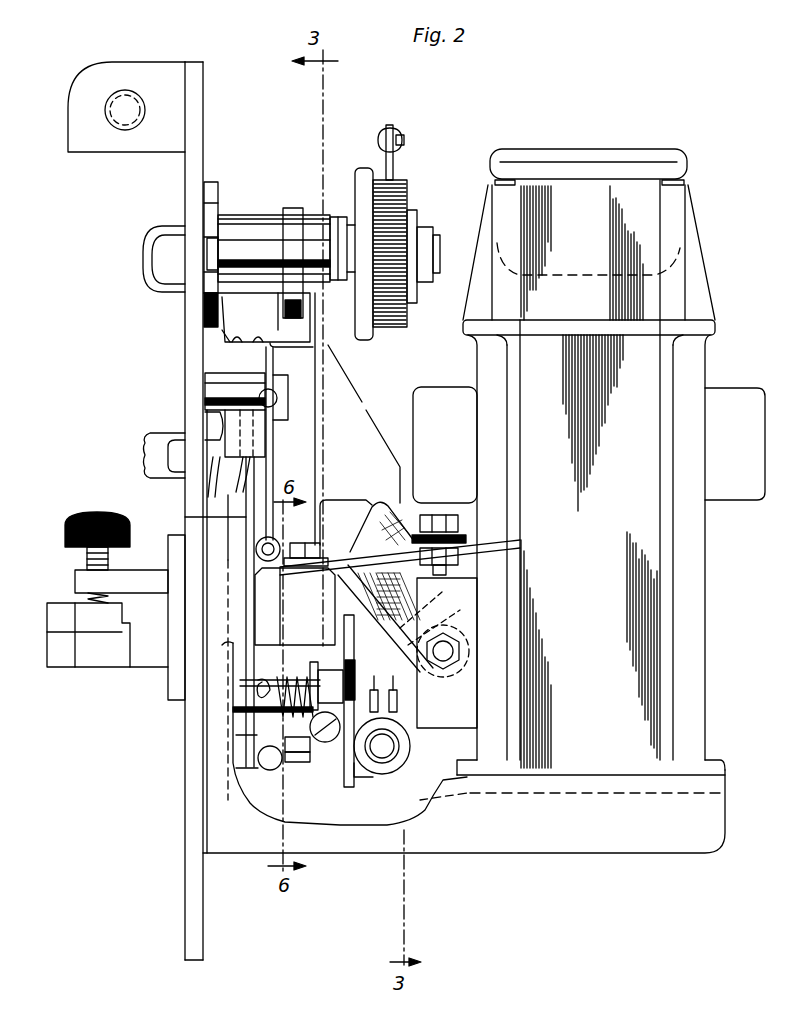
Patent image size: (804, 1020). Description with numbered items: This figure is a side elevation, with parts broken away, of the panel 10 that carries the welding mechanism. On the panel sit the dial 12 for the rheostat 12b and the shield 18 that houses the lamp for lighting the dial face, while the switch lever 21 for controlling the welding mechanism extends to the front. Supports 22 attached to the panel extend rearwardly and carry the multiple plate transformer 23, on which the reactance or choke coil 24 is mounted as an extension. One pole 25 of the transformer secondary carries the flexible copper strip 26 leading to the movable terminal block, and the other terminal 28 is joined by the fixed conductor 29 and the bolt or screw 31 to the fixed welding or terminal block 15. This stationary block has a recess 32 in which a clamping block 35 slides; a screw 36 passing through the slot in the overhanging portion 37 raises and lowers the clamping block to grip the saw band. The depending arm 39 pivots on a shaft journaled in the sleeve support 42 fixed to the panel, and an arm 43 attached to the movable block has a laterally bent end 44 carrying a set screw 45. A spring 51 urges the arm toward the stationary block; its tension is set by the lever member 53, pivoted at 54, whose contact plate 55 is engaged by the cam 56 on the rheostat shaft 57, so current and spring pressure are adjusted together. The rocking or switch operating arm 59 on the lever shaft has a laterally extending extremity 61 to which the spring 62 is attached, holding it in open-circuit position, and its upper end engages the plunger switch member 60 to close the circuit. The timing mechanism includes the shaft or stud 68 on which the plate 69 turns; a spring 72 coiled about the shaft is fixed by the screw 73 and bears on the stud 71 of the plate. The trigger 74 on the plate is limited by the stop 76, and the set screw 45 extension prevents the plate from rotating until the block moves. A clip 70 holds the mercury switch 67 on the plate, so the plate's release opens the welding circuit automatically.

The panel 10 is at (205, 70).
The dial 12 is at (146, 245).
The rheostat 12b is at (400, 180).
The fixed welding or terminal block 15 is at (147, 660).
The shield 18 is at (95, 65).
The switch lever 21 is at (150, 435).
The supports 22 is at (652, 840).
The transformer 23 is at (625, 698).
The reactance or choke coil 24 is at (640, 152).
The pole 25 is at (460, 590).
The copper strip 26 is at (350, 506).
The terminal 28 is at (440, 515).
The fixed conductor 29 is at (364, 566).
The bolt or screw 31 is at (316, 550).
The recess 32 is at (112, 598).
The clamping block 35 is at (47, 610).
The screw 36 is at (85, 513).
The overhanging portion 37 is at (75, 575).
The depending arm 39 is at (305, 395).
The sleeve support 42 is at (213, 185).
The arm 43 is at (344, 647).
The laterally bent end 44 is at (398, 700).
The set screw 45 is at (318, 768).
The spring 51 is at (279, 546).
The lever member 53 is at (268, 475).
The pivot 54 is at (210, 376).
The contact plate 55 is at (280, 306).
The cam 56 is at (297, 210).
The shaft 57 is at (246, 250).
The rocking or switch operating arm 59 is at (205, 517).
The plunger switch member 60 is at (266, 420).
The laterally extending extremity 61 is at (257, 732).
The spring 62 is at (262, 770).
The mercury switch 67 is at (412, 746).
The shaft or stud 68 is at (309, 679).
The plate 69 is at (328, 742).
The clip 70 is at (357, 778).
The stud 71 is at (273, 770).
The spring 72 is at (283, 672).
The screw 73 is at (265, 688).
The trigger 74 is at (348, 686).
The stop 76 is at (335, 680).